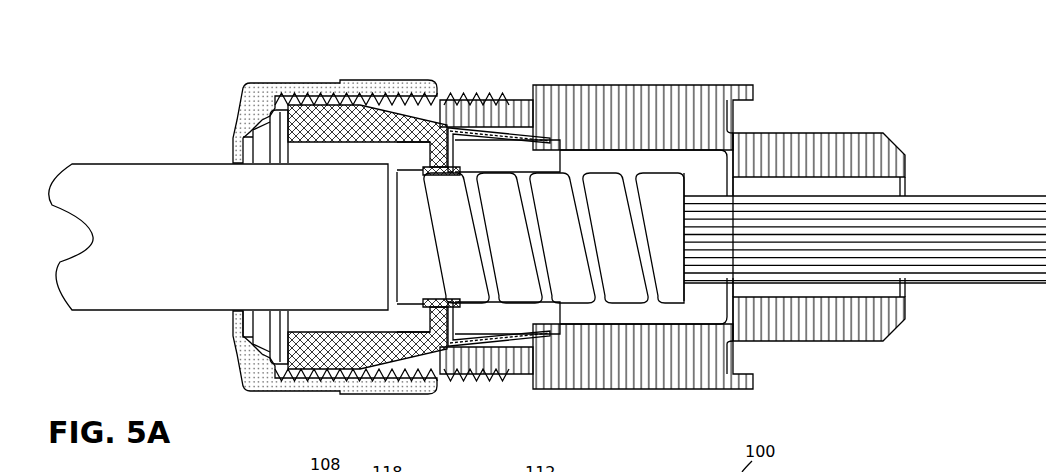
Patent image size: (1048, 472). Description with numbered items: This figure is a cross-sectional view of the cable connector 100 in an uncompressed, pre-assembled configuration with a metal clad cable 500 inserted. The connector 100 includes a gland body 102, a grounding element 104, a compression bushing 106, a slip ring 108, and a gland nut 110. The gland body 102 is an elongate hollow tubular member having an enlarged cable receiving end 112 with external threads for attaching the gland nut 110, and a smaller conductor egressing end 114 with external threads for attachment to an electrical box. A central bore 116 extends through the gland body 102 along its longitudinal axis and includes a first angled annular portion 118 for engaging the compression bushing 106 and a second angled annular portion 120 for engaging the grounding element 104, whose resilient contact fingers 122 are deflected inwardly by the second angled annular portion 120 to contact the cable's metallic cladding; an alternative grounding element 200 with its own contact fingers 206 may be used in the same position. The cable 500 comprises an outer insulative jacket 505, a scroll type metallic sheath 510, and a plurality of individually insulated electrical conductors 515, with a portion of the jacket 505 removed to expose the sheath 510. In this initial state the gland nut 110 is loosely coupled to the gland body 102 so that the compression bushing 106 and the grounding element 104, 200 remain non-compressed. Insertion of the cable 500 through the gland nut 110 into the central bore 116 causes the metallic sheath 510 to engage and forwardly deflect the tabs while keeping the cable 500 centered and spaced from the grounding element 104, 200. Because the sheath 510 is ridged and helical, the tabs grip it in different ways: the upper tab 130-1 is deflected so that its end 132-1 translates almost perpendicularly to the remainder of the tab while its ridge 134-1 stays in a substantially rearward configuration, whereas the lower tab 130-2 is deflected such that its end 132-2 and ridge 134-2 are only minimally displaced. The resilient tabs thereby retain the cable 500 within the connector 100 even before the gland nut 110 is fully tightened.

The cable connector 100 is at (670, 100).
The gland body 102 is at (768, 100).
The grounding element 104 is at (512, 348).
The compression bushing 106 is at (348, 356).
The slip ring 108 is at (278, 116).
The gland nut 110 is at (265, 394).
The cable receiving end 112 is at (473, 100).
The conductor egressing end 114 is at (876, 327).
The central bore 116 is at (848, 120).
The first angled annular portion 118 is at (405, 100).
The second angled annular portion 120 is at (542, 130).
The contact fingers 122 is at (466, 349).
The upper tab 130-1 is at (427, 158).
The lower tab 130-2 is at (428, 316).
The end of upper tab 132-1 is at (462, 170).
The end of lower tab 132-2 is at (460, 305).
The ridge of upper tab 134-1 is at (438, 176).
The ridge of lower tab 134-2 is at (438, 298).
The grounding element 200 is at (624, 296).
The contact fingers 206 is at (384, 414).
The metal clad cable 500 is at (223, 201).
The outer insulative jacket 505 is at (233, 246).
The metallic sheath 510 is at (528, 246).
The electrical conductors 515 is at (972, 292).